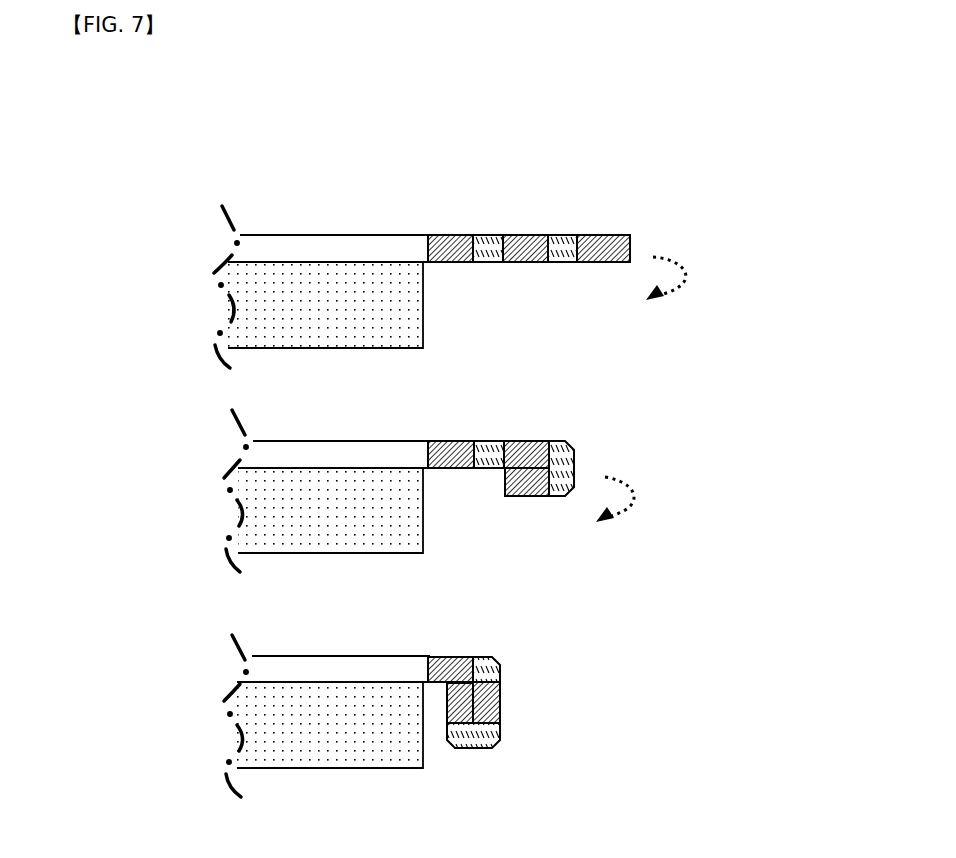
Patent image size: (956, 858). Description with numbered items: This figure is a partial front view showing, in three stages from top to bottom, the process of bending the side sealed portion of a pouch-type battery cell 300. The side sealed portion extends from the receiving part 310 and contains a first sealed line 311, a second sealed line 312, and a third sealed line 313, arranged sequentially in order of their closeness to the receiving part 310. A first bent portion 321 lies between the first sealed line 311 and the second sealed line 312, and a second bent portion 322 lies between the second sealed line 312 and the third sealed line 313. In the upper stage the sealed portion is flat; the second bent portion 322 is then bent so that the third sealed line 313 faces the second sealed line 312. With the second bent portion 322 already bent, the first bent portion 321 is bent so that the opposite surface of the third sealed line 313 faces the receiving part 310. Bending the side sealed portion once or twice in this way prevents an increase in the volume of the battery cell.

The display device 300 is at (130, 148).
The receiving part 310 is at (293, 348).
The first sealed line 311 is at (450, 235).
The second sealed line 312 is at (537, 235).
The third sealed line 313 is at (610, 235).
The first bent portion 321 is at (490, 263).
The second bent portion 322 is at (560, 263).